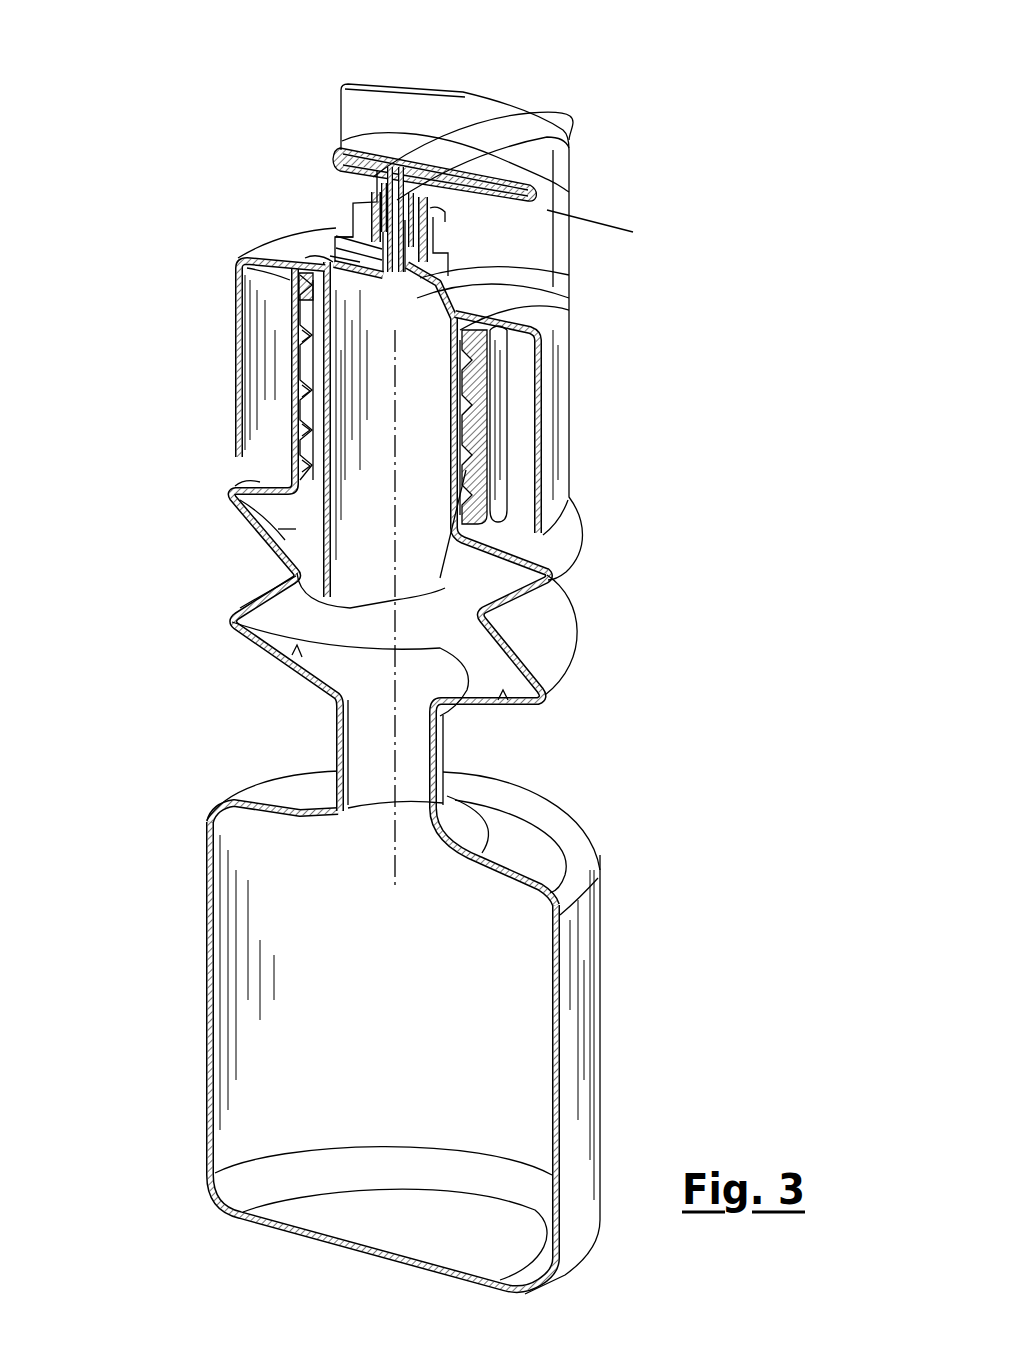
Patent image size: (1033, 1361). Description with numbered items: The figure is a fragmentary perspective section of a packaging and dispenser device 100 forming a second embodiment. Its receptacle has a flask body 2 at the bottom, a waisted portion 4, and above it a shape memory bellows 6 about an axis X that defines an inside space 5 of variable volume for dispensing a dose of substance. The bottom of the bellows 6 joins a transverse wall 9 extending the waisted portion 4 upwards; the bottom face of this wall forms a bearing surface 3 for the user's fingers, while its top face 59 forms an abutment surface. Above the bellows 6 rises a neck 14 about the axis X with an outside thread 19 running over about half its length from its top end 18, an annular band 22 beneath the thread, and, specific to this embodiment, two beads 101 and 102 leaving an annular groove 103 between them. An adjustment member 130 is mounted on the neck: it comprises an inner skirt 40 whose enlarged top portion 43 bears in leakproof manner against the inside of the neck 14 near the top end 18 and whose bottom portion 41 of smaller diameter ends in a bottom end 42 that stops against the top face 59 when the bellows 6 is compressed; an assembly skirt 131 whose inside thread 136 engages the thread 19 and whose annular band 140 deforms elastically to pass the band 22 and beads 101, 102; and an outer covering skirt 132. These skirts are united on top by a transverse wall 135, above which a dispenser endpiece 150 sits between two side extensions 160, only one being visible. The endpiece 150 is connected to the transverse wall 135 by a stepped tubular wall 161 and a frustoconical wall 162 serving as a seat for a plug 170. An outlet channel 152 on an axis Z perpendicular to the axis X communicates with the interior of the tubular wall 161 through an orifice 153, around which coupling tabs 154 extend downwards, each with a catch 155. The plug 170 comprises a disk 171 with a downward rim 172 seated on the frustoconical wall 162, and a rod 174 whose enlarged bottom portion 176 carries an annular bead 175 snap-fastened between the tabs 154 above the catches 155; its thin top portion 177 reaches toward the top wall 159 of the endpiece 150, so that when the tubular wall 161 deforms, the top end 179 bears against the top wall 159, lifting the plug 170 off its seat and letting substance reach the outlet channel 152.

The flask body 2 is at (580, 993).
The bearing surface 3 is at (250, 653).
The waisted portion 4 is at (438, 757).
The inside space 5 is at (287, 516).
The shape memory bellows 6 is at (553, 653).
The transverse wall 9 is at (297, 650).
The neck 14 is at (463, 420).
The top end 18 is at (237, 286).
The outside thread 19 is at (320, 335).
The annular band 22 is at (312, 395).
The inner skirt 40 is at (312, 355).
The bottom portion 41 is at (323, 540).
The bottom end 42 is at (297, 576).
The enlarged top portion 43 is at (457, 393).
The top face 59 is at (503, 697).
The device 100 is at (572, 52).
The bead 101 is at (312, 430).
The bead 102 is at (300, 478).
The annular groove 103 is at (495, 497).
The adjustment member 130 is at (568, 410).
The assembly skirt 131 is at (280, 320).
The outer skirt 132 is at (230, 283).
The transverse wall 135 is at (517, 303).
The inside thread 136 is at (490, 372).
The annular band 140 is at (233, 500).
The dispenser endpiece 150 is at (394, 125).
The outlet channel 152 is at (550, 215).
The orifice 153 is at (381, 182).
The coupling tabs 154 is at (355, 203).
The catch 155 is at (440, 256).
The top wall 159 is at (421, 145).
The side extension 160 is at (482, 100).
The stepped tubular wall 161 is at (337, 258).
The frustoconical wall 162 is at (325, 268).
The plug 170 is at (440, 296).
The disk 171 is at (365, 265).
The rim 172 is at (503, 327).
The rod 174 is at (337, 237).
The annular bead 175 is at (553, 127).
The enlarged bottom portion 176 is at (445, 268).
The top portion 177 is at (418, 190).
The top end 179 is at (338, 147).
The axis X is at (400, 597).
The axis Z is at (600, 220).